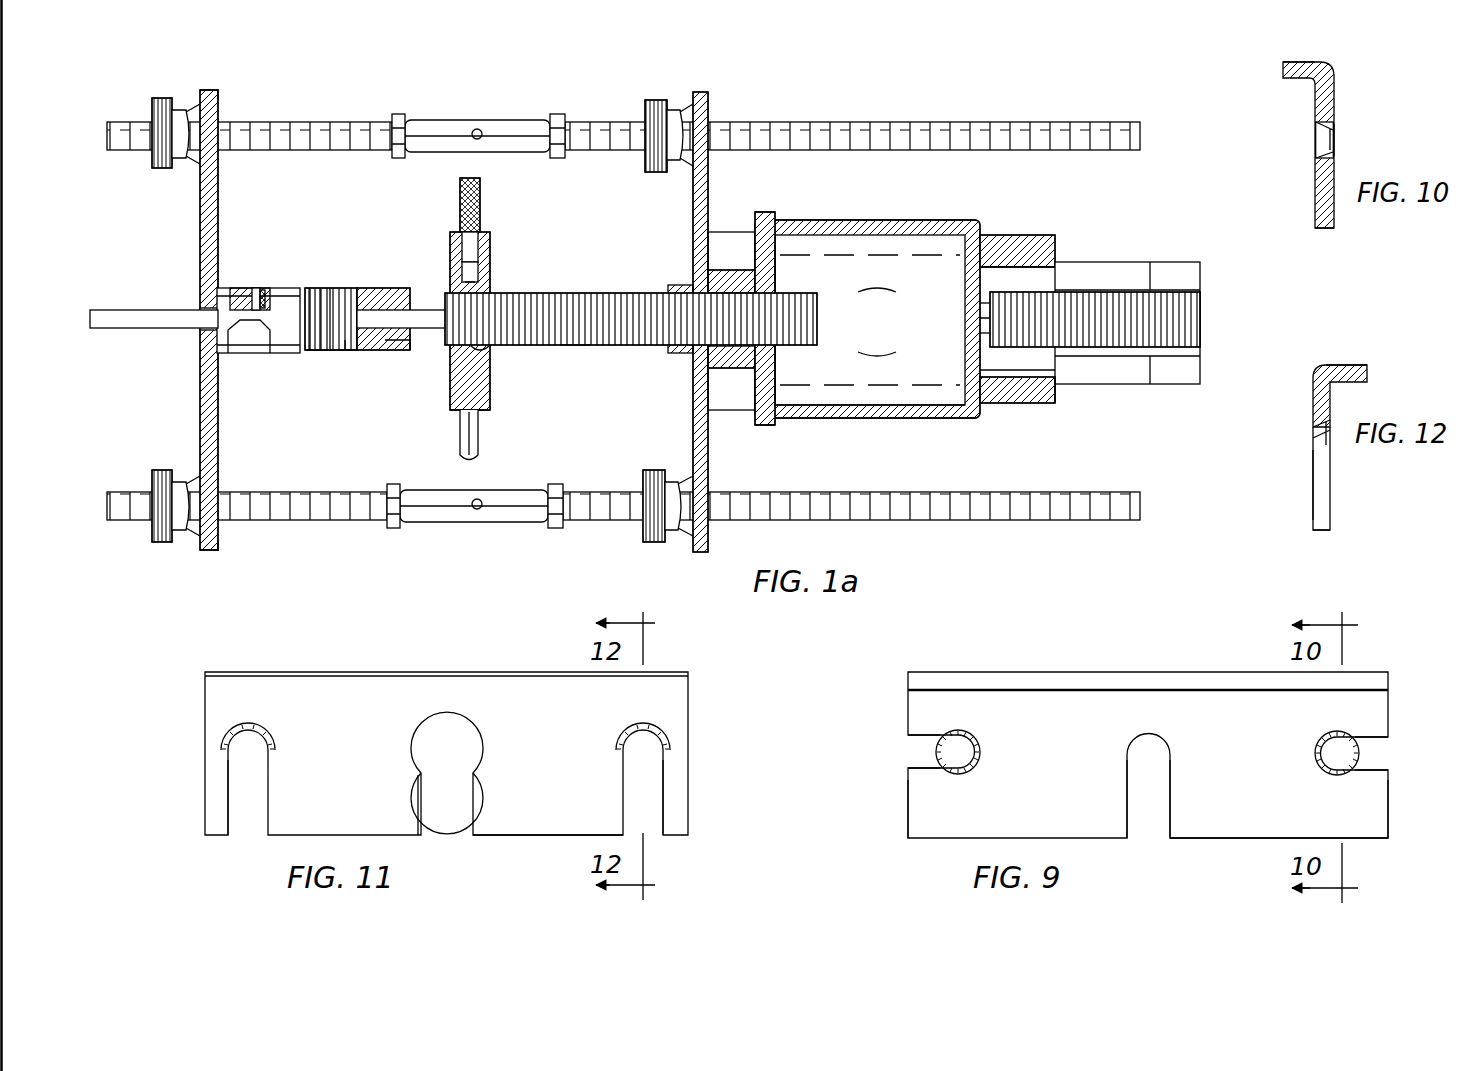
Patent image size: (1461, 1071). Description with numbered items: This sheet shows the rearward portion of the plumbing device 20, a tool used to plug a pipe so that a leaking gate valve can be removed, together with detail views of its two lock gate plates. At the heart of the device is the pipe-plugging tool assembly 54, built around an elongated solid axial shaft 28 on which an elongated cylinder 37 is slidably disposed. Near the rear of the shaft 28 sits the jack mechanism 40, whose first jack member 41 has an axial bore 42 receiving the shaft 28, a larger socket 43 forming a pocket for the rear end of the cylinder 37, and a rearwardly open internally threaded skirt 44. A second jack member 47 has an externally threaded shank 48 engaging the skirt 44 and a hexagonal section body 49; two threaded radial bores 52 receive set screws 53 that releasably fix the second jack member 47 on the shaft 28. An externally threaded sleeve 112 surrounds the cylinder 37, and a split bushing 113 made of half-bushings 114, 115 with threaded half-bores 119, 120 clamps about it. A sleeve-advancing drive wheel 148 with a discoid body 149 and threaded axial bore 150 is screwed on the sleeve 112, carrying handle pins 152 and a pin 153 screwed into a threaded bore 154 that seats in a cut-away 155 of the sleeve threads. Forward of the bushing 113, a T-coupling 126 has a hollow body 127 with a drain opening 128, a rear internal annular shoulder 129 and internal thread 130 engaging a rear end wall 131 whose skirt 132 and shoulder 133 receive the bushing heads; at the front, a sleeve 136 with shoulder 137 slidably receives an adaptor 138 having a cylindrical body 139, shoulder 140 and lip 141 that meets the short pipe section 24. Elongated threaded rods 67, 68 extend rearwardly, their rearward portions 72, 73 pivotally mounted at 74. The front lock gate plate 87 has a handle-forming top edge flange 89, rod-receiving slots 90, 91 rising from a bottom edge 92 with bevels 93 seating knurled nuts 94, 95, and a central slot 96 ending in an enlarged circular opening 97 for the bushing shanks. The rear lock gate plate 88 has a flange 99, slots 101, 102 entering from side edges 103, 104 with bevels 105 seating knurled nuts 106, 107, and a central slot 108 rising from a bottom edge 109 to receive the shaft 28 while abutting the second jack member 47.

In FIG. 1A, the plumbing device 20 is at (748, 78).
In FIG. 1A, the short section of pipe 24 is at (1100, 290).
In FIG. 1A, the axial shaft 28 is at (158, 330).
In FIG. 1A, the elongated cylinder 37 is at (395, 332).
In FIG. 1A, the jack mechanism 40 is at (316, 272).
In FIG. 1A, the first jack member 41 is at (384, 284).
In FIG. 1A, the axial bore 42 is at (350, 352).
In FIG. 1A, the socket 43 is at (392, 352).
In FIG. 1A, the skirt 44 is at (332, 352).
In FIG. 1A, the second jack member 47 is at (236, 362).
In FIG. 1A, the shank 48 is at (326, 290).
In FIG. 1A, the hexagonal section body 49 is at (240, 295).
In FIG. 1A, the threaded radial bores 52 is at (262, 292).
In FIG. 1A, the set screws 53 is at (255, 290).
In FIG. 1A, the pipe-plugging tool assembly 54 is at (575, 286).
In FIG. 1A, the elongated threaded rod 67 is at (905, 520).
In FIG. 1A, the elongated threaded rod 68 is at (895, 122).
In FIG. 1A, the rearward portion 72 is at (305, 520).
In FIG. 1A, the rearward portion 73 is at (290, 122).
In FIG. 1A, the pivotal mounting 74 is at (494, 112).
In FIG. 1A, the front lock gate plate 87 is at (712, 178).
In FIG. 11, the front lock gate plate 87 is at (480, 668).
In FIG. 12, the front lock gate plate 87 is at (1310, 375).
In FIG. 1A, the rear lock gate plate 88 is at (222, 202).
In FIG. 9, the rear lock gate plate 88 is at (1148, 670).
In FIG. 10, the rear lock gate plate 88 is at (1346, 82).
In FIG. 12, the top edge flange 89 is at (1355, 365).
In FIG. 11, the rod-receiving slot 90 is at (660, 796).
In FIG. 12, the rod-receiving slot 90 is at (1322, 488).
In FIG. 11, the rod-receiving slot 91 is at (248, 790).
In FIG. 11, the bottom edge 92 is at (548, 836).
In FIG. 12, the bottom edge 92 is at (1325, 530).
In FIG. 11, the bevel 93 is at (235, 732).
In FIG. 12, the bevel 93 is at (1316, 435).
In FIG. 1A, the knurled plate-holding nut 94 is at (655, 542).
In FIG. 1A, the knurled plate-holding nut 95 is at (656, 100).
In FIG. 11, the central open-ended slot 96 is at (445, 796).
In FIG. 11, the enlarged circular opening 97 is at (455, 728).
In FIG. 9, the top edge flange 99 is at (1378, 676).
In FIG. 10, the top edge flange 99 is at (1300, 62).
In FIG. 9, the rod-receiving slot 101 is at (1368, 755).
In FIG. 10, the rod-receiving slot 101 is at (1334, 140).
In FIG. 9, the rod-receiving slot 102 is at (930, 752).
In FIG. 1A, the side edge 103 is at (210, 552).
In FIG. 9, the side edge 103 is at (1388, 795).
In FIG. 1A, the side edge 104 is at (208, 90).
In FIG. 9, the side edge 104 is at (908, 800).
In FIG. 9, the bevel 105 is at (975, 745).
In FIG. 10, the bevel 105 is at (1318, 136).
In FIG. 1A, the knurled plate-holding nut 106 is at (163, 542).
In FIG. 1A, the knurled plate-holding nut 107 is at (162, 98).
In FIG. 1A, the central open-ended slot 108 is at (203, 320).
In FIG. 9, the central open-ended slot 108 is at (1150, 800).
In FIG. 9, the bottom edge 109 is at (1220, 840).
In FIG. 10, the bottom edge 109 is at (1325, 228).
In FIG. 1A, the externally threaded sleeve 112 is at (571, 350).
In FIG. 1A, the split bushing 113 is at (680, 286).
In FIG. 1A, the half-bushing 114 is at (725, 275).
In FIG. 1A, the half-bushing 115 is at (725, 370).
In FIG. 1A, the threaded half-bore 119 is at (656, 296).
In FIG. 1A, the threaded half-bore 120 is at (680, 350).
In FIG. 1A, the T-coupling 126 is at (870, 216).
In FIG. 1A, the hollow body 127 is at (840, 420).
In FIG. 1A, the drain opening 128 is at (862, 292).
In FIG. 1A, the internal annular shoulder 129 is at (760, 420).
In FIG. 1A, the internal thread 130 is at (775, 225).
In FIG. 1A, the rear end wall 131 is at (770, 380).
In FIG. 1A, the skirt 132 is at (760, 232).
In FIG. 1A, the internal annular shoulder 133 is at (775, 262).
In FIG. 1A, the sleeve 136 is at (1015, 240).
In FIG. 1A, the internal annular shoulder 137 is at (990, 240).
In FIG. 1A, the adaptor 138 is at (1040, 245).
In FIG. 1A, the cylindrical body 139 is at (1000, 405).
In FIG. 1A, the annular shoulder 140 is at (1000, 372).
In FIG. 1A, the external annular lip 141 is at (1045, 402).
In FIG. 1A, the sleeve-advancing drive wheel 148 is at (488, 388).
In FIG. 1A, the discoid body 149 is at (452, 352).
In FIG. 1A, the axial bore 150 is at (478, 347).
In FIG. 1A, the handle pins 152 is at (476, 445).
In FIG. 1A, the pin 153 is at (481, 195).
In FIG. 1A, the threaded bore 154 is at (488, 248).
In FIG. 1A, the cut-away thread seating 155 is at (488, 272).